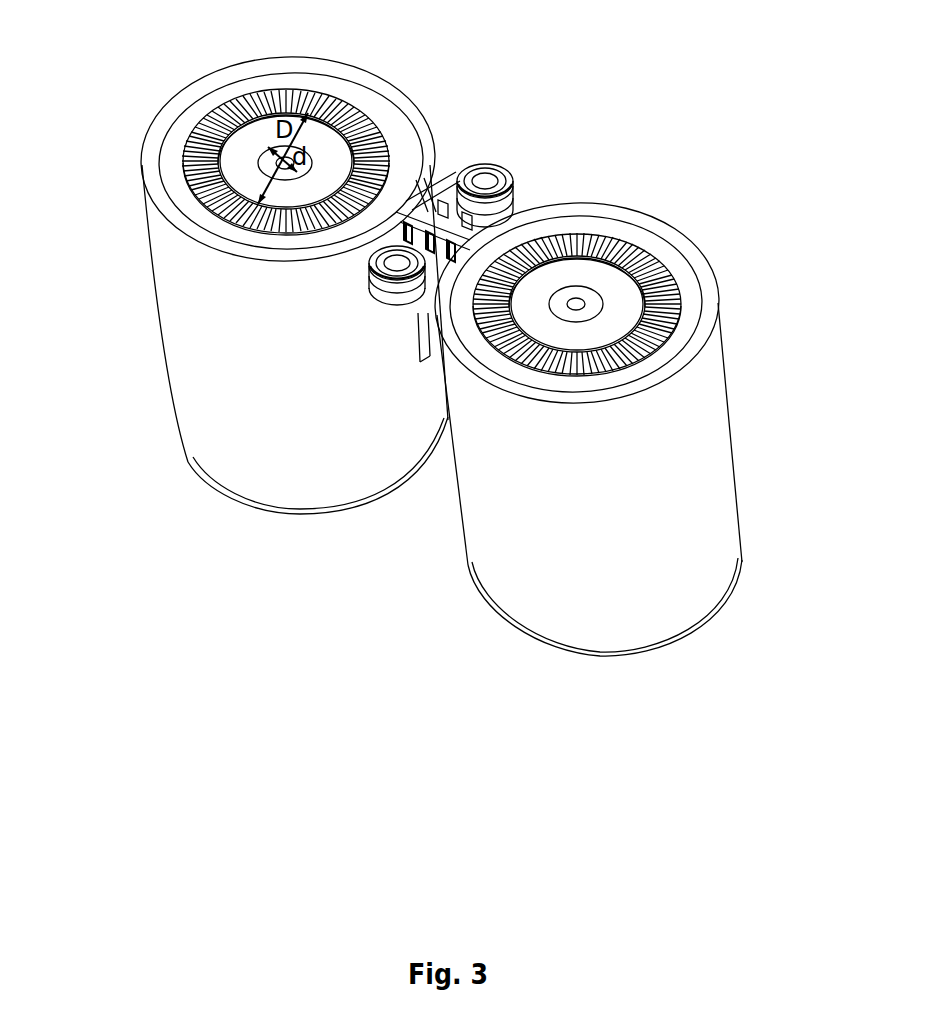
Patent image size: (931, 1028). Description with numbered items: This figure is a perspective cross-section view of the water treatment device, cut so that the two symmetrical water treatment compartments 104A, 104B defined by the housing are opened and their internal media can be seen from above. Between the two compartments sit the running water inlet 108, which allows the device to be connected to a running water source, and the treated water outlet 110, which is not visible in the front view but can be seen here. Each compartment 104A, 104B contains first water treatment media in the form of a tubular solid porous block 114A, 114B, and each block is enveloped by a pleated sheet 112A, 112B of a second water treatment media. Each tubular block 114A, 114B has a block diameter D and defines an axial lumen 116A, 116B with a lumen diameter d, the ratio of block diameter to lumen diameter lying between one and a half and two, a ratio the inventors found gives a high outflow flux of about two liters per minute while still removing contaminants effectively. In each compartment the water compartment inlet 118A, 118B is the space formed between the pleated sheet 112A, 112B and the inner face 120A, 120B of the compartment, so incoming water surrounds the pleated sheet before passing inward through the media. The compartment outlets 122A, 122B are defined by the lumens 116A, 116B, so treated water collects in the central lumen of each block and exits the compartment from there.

The water treatment compartment 104A is at (710, 497).
The water treatment compartment 104B is at (233, 458).
The running water inlet 108 is at (380, 306).
The treated water outlet 110 is at (478, 168).
The pleated sheet 112A is at (647, 274).
The pleated sheet 112B is at (216, 124).
The tubular solid block 114A is at (600, 278).
The tubular solid block 114B is at (232, 151).
The axial lumen 116A is at (603, 307).
The axial lumen 116B is at (256, 163).
The water compartment inlet 118A is at (687, 288).
The water compartment inlet 118B is at (364, 100).
The inner face 120A is at (560, 378).
The inner face 120B is at (180, 211).
The compartment outlet 122A is at (567, 300).
The compartment outlet 122B is at (267, 157).